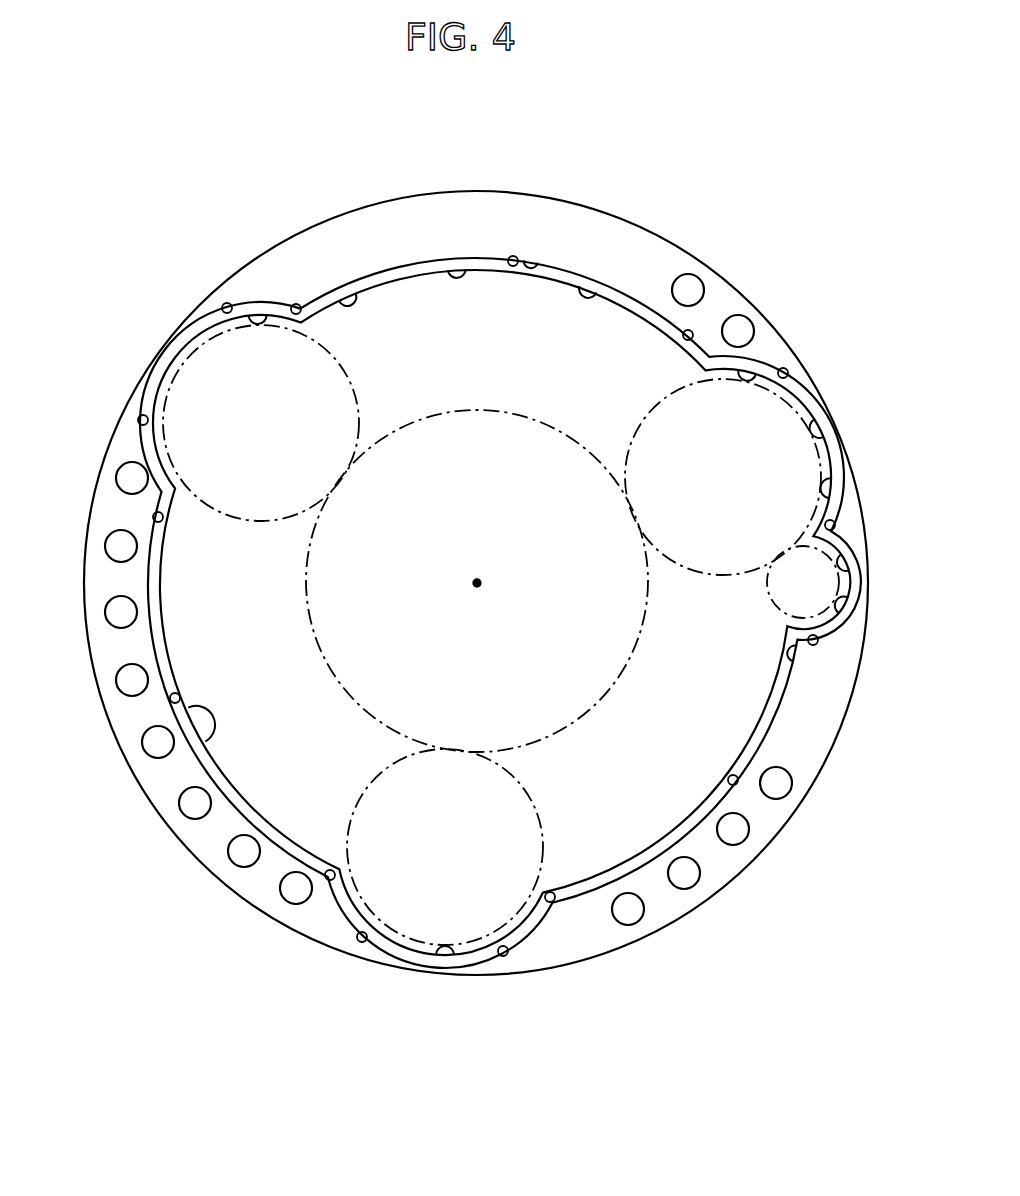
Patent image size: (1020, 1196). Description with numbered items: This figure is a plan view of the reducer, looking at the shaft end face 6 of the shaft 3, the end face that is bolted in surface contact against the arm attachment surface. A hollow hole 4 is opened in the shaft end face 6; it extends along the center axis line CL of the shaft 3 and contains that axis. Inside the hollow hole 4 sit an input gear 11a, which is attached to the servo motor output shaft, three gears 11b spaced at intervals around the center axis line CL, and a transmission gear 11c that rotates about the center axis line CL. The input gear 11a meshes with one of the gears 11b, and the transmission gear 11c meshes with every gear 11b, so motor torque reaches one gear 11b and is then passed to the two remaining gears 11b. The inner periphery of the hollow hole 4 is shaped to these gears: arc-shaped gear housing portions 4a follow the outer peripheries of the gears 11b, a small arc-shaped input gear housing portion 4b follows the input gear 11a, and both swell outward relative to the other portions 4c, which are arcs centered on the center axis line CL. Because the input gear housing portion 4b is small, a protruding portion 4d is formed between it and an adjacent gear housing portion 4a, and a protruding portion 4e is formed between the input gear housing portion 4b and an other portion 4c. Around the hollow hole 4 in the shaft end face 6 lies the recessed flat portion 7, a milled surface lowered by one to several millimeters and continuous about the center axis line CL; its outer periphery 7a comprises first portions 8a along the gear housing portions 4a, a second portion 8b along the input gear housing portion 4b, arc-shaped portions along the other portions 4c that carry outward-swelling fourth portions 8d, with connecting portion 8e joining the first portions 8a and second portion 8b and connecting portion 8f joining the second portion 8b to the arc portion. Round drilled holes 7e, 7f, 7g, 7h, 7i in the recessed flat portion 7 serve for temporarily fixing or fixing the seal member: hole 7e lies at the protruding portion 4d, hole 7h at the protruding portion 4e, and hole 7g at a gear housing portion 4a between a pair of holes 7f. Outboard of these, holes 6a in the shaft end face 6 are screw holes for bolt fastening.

The shaft 3 is at (828, 757).
The hollow hole 4 is at (600, 292).
The gear housing portion 4a is at (262, 314).
The input gear housing portion 4b is at (845, 572).
The other portion of the inner periphery surface 4c is at (462, 265).
The protruding portion 4d is at (815, 528).
The protruding portion 4e is at (795, 625).
The shaft end face 6 is at (652, 253).
The hole 6a is at (695, 278).
The recessed flat portion 7 is at (387, 272).
The outer periphery 7a is at (347, 290).
The hole 7e is at (836, 524).
The hole 7f is at (296, 303).
The hole 7g is at (222, 304).
The hole 7h is at (818, 640).
The hole 7i is at (515, 255).
The first portion 8a is at (812, 430).
The second portion 8b is at (838, 604).
The fourth portion 8d is at (557, 264).
The connecting portion 8e is at (822, 485).
The connecting portion 8f is at (805, 660).
The input gear 11a is at (775, 607).
The gear 11b is at (337, 360).
The transmission gear 11c is at (494, 410).
The center axis line CL is at (483, 583).